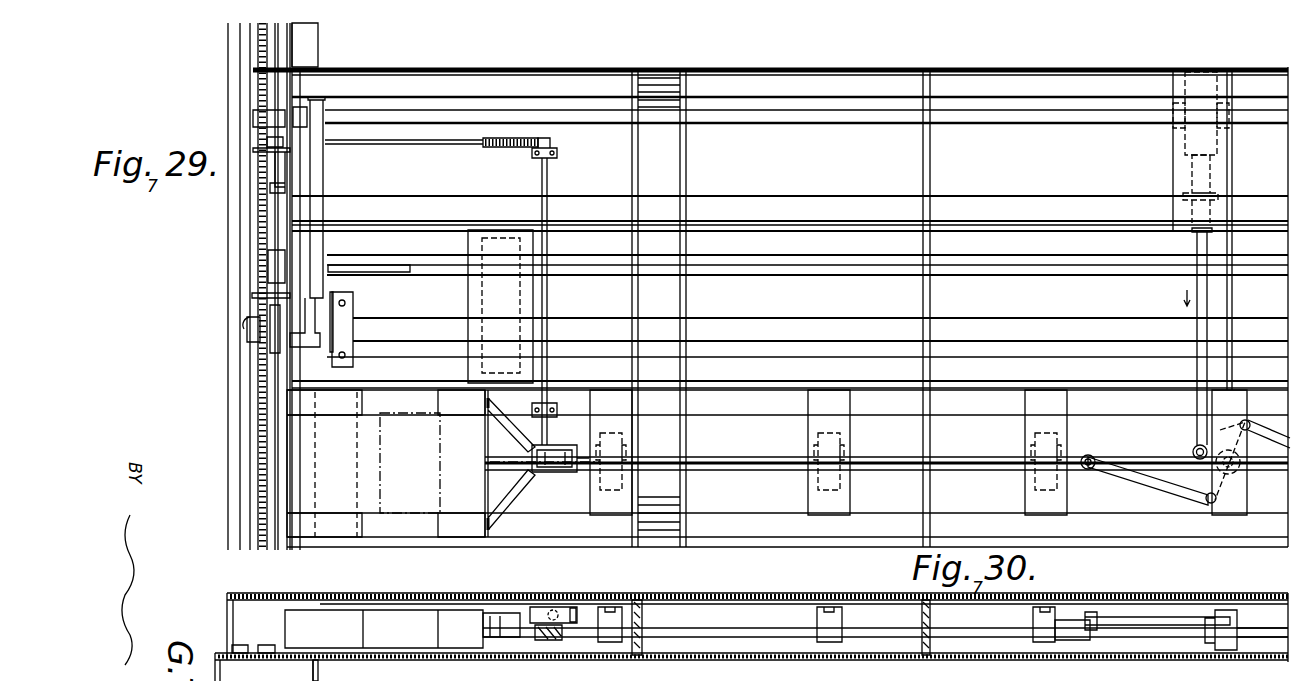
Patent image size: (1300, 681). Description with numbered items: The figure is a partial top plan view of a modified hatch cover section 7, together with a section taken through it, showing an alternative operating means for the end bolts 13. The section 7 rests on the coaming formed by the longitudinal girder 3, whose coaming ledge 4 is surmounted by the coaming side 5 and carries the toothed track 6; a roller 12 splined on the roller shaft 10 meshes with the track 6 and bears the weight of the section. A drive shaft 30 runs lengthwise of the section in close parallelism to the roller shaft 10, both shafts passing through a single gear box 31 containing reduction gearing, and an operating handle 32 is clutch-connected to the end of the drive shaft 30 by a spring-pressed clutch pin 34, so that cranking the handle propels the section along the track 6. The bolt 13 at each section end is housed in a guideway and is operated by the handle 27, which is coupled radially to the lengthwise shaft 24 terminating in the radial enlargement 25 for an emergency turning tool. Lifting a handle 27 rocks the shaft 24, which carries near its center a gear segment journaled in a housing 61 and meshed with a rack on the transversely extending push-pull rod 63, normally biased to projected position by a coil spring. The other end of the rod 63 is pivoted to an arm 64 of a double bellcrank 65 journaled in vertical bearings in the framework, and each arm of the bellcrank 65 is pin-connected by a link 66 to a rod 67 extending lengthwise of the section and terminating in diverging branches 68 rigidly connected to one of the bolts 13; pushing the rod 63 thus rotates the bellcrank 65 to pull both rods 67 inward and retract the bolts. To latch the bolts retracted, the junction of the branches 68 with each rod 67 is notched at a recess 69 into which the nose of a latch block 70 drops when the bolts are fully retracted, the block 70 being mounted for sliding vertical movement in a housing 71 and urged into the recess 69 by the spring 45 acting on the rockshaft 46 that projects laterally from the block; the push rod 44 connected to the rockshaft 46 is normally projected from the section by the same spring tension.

In FIG. 30, the longitudinal girder 3 is at (325, 670).
In FIG. 29, the coaming ledge 4 is at (255, 400).
In FIG. 30, the coaming ledge 4 is at (268, 665).
In FIG. 29, the coaming side 5 is at (227, 258).
In FIG. 30, the coaming side 5 is at (227, 622).
In FIG. 29, the track 6 is at (262, 197).
In FIG. 30, the track 6 is at (275, 650).
In FIG. 29, the hatch cover section 7 is at (801, 67).
In FIG. 30, the hatch cover section 7 is at (320, 592).
In FIG. 29, the roller shaft 10 is at (745, 326).
In FIG. 29, the roller 12 is at (268, 312).
In FIG. 29, the bolt 13 is at (397, 457).
In FIG. 29, the lengthwise shaft 24 is at (734, 117).
In FIG. 29, the radial enlargement 25 is at (252, 118).
In FIG. 29, the handle 27 is at (315, 186).
In FIG. 29, the drive shaft 30 is at (814, 265).
In FIG. 29, the gear box 31 is at (493, 278).
In FIG. 29, the operating handle 32 is at (277, 172).
In FIG. 29, the clutch pin 34 is at (506, 470).
In FIG. 29, the push rod 44 is at (437, 141).
In FIG. 29, the spring 45 is at (512, 140).
In FIG. 29, the rockshaft 46 is at (546, 190).
In FIG. 29, the housing 61 is at (1180, 147).
In FIG. 29, the push-pull rod 63 is at (1200, 368).
In FIG. 29, the arm 64 is at (1193, 450).
In FIG. 29, the double bellcrank 65 is at (1218, 497).
In FIG. 29, the link 66 is at (1155, 483).
In FIG. 30, the link 66 is at (1153, 618).
In FIG. 29, the rod 67 is at (943, 463).
In FIG. 30, the rod 67 is at (967, 632).
In FIG. 29, the diverging branches 68 is at (513, 422).
In FIG. 30, the diverging branches 68 is at (492, 628).
In FIG. 30, the recess 69 is at (535, 640).
In FIG. 30, the latch block 70 is at (553, 610).
In FIG. 30, the housing 71 is at (583, 608).